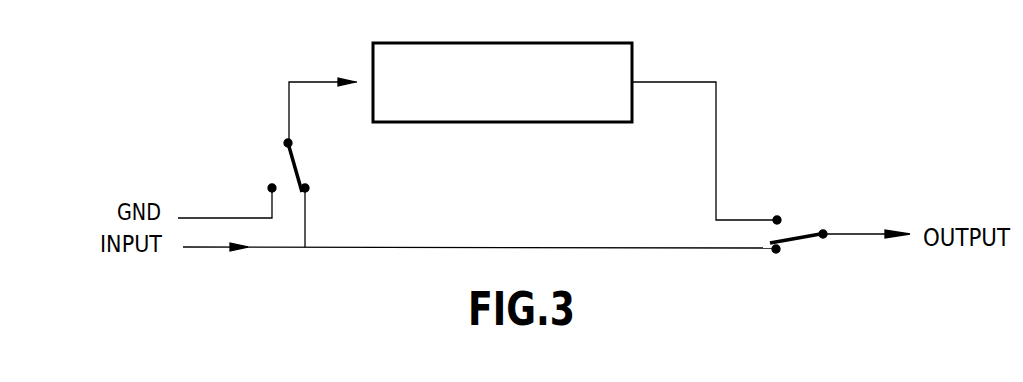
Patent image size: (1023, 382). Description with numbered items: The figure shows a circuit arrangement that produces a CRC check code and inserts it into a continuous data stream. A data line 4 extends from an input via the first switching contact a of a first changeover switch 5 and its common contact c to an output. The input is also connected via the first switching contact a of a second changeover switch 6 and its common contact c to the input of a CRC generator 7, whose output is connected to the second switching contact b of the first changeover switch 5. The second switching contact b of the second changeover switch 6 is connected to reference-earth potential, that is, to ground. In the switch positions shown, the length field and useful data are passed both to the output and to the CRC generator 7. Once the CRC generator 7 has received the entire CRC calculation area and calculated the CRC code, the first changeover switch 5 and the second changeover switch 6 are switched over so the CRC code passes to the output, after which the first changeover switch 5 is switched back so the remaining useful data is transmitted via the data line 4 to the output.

The data line 4 is at (460, 247).
The first changeover switch 5 is at (797, 245).
The second changeover switch 6 is at (293, 171).
The CRC generator 7 is at (460, 43).